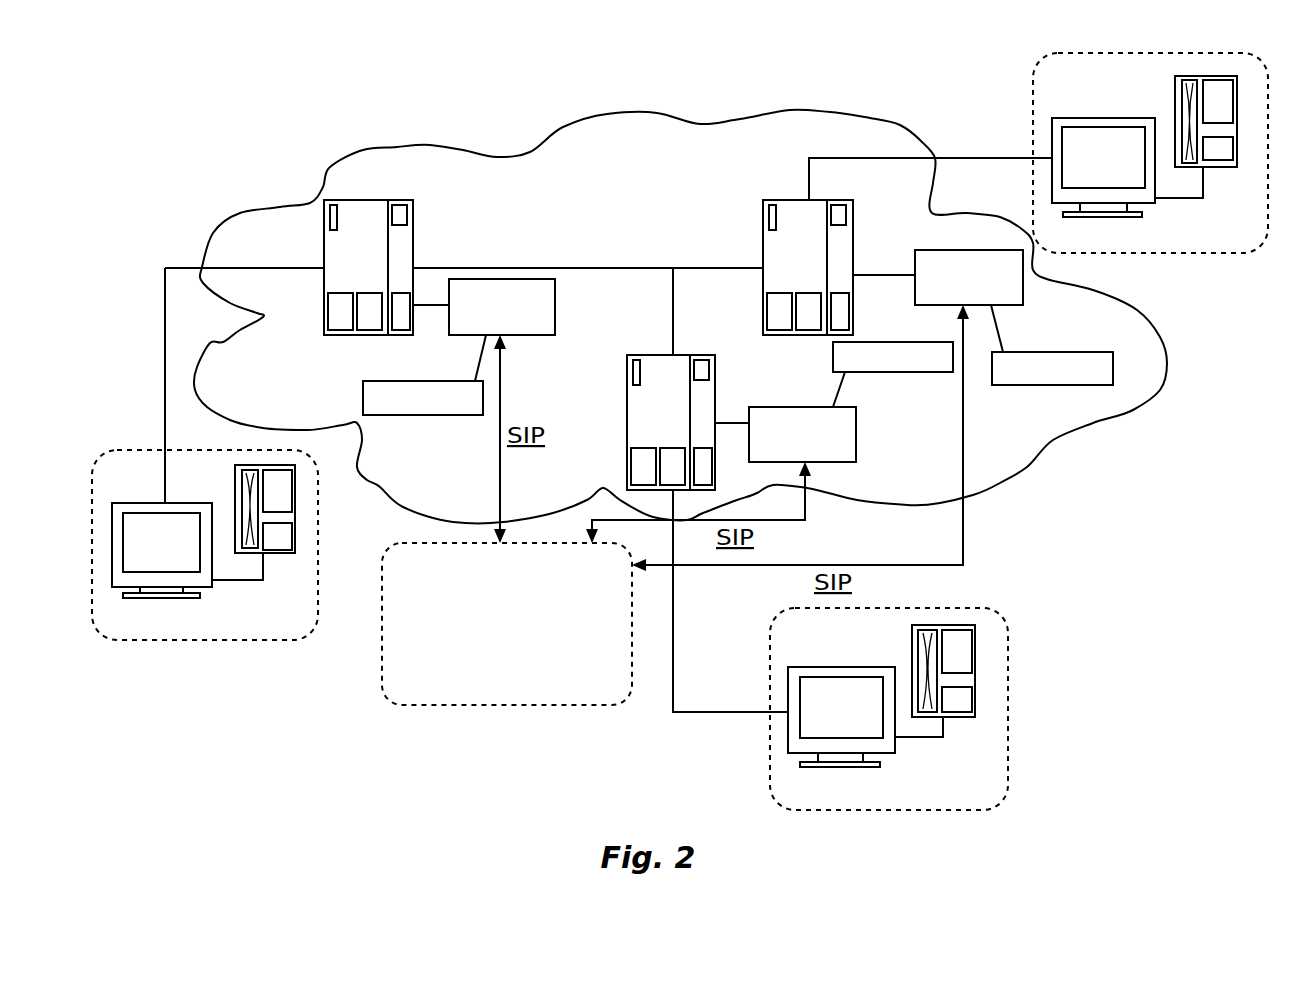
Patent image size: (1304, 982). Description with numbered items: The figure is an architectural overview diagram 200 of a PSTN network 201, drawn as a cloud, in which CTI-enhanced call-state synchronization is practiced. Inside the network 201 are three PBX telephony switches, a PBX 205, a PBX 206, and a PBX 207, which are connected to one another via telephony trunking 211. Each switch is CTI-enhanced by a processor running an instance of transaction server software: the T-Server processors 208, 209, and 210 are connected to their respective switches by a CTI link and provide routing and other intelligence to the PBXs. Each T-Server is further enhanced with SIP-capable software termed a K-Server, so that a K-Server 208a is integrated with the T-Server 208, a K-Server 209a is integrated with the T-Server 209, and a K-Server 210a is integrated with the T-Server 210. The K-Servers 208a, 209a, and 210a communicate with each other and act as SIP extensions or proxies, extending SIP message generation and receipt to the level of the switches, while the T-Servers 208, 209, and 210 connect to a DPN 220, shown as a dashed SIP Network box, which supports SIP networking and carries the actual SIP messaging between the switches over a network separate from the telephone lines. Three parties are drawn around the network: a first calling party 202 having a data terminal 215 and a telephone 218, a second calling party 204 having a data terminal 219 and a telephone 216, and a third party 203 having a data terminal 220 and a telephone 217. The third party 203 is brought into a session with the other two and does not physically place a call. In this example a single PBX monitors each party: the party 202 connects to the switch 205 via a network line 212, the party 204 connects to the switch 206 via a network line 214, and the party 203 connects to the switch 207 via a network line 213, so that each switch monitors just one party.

The architectural overview diagram 200 is at (182, 178).
The PSTN network 201 is at (498, 122).
The first calling party 202 is at (205, 585).
The third party 203 is at (927, 705).
The second calling party 204 is at (1150, 195).
The PBX 205 is at (413, 238).
The PBX 206 is at (763, 243).
The PBX 207 is at (715, 397).
The T-Server processor 208 is at (555, 327).
The K-Server 208a is at (363, 392).
The T-Server processor 209 is at (940, 250).
The K-Server 209a is at (1030, 352).
The T-Server processor 210 is at (857, 433).
The K-Server 210a is at (867, 377).
The telephony trunking 211 is at (613, 266).
The network line 212 is at (163, 360).
The network line 213 is at (732, 714).
The network line 214 is at (985, 156).
The data terminal 215 is at (162, 600).
The telephone 216 is at (1220, 170).
The telephone 217 is at (962, 719).
The telephone 218 is at (235, 498).
The data terminal 219 is at (1117, 116).
The DPN 220 is at (496, 718).